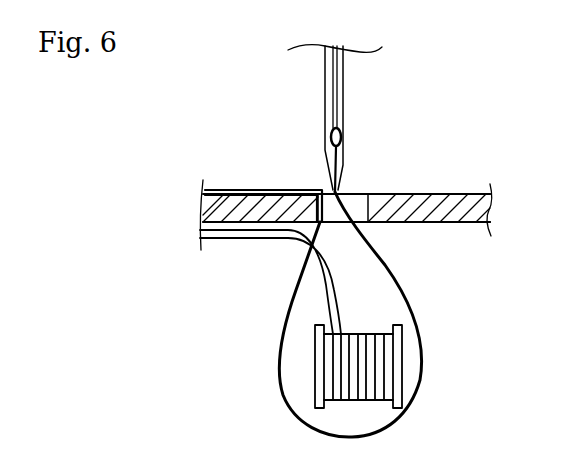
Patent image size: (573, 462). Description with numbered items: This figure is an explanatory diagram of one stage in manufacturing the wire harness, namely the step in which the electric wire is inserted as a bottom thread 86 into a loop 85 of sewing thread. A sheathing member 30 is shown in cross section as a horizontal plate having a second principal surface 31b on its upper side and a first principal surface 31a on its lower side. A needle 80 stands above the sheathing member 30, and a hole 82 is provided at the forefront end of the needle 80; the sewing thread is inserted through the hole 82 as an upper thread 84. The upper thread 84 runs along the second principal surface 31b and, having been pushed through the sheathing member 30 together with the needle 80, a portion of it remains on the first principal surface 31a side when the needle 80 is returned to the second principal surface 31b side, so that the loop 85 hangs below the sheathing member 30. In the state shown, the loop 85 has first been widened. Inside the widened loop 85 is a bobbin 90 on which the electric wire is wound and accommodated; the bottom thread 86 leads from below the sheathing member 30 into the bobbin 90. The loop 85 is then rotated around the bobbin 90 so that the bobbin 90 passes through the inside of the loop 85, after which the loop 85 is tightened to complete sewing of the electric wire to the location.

The sheathing member 30 is at (430, 194).
The first principal surface 31a is at (460, 222).
The second principal surface 31b is at (462, 194).
The needle 80 is at (343, 83).
The hole 82 is at (342, 137).
The upper thread 84 is at (250, 190).
The loop 85 is at (396, 296).
The bottom thread 86 is at (243, 240).
The bobbin 90 is at (402, 368).